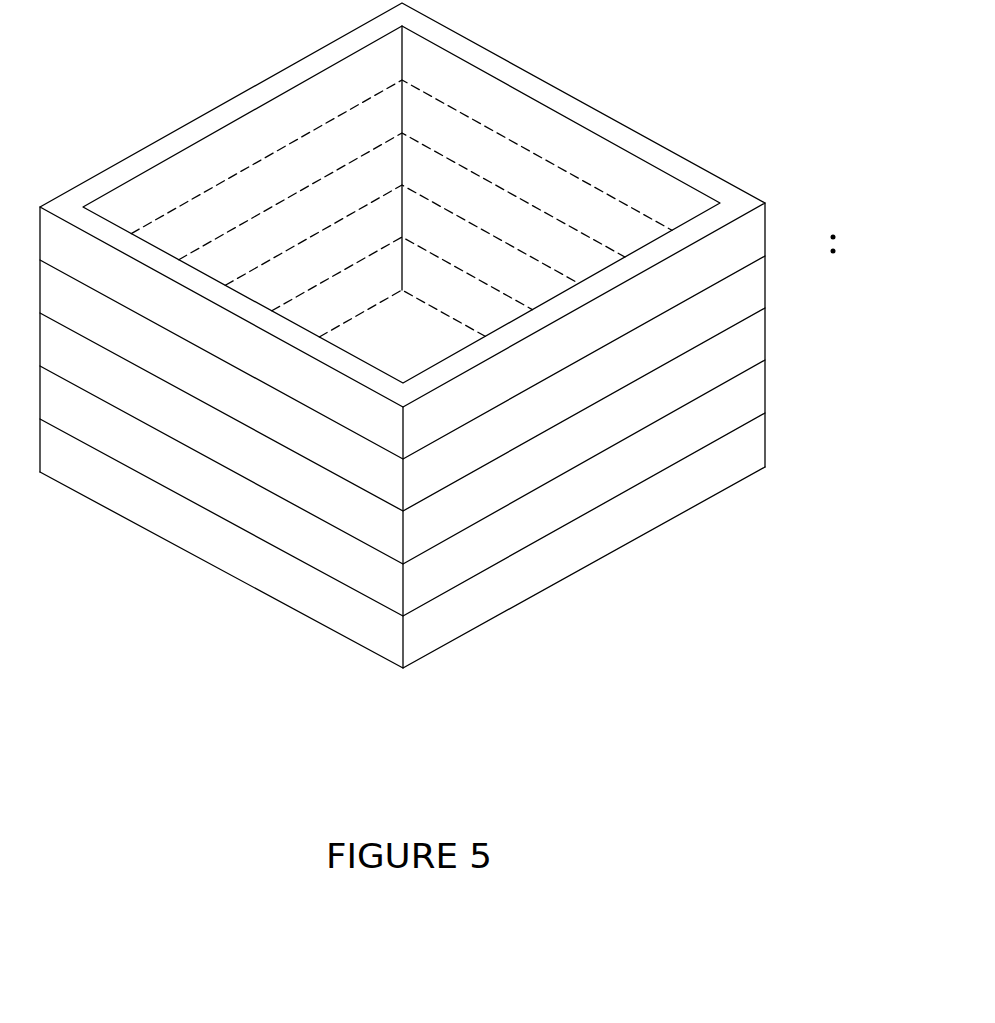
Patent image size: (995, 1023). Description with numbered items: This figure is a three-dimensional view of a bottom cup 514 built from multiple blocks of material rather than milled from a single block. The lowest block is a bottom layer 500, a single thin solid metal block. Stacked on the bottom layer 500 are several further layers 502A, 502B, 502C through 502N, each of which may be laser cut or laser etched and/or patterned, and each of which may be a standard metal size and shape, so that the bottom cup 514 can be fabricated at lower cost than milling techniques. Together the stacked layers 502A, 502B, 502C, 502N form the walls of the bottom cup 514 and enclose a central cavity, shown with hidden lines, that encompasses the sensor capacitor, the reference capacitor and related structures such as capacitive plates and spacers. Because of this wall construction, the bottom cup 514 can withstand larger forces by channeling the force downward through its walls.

The bottom layer 500 is at (752, 457).
The layer 502A is at (752, 403).
The layer 502B is at (752, 348).
The layer 502C is at (752, 298).
The layer 502N is at (752, 234).
The bottom cup 514 is at (700, 603).